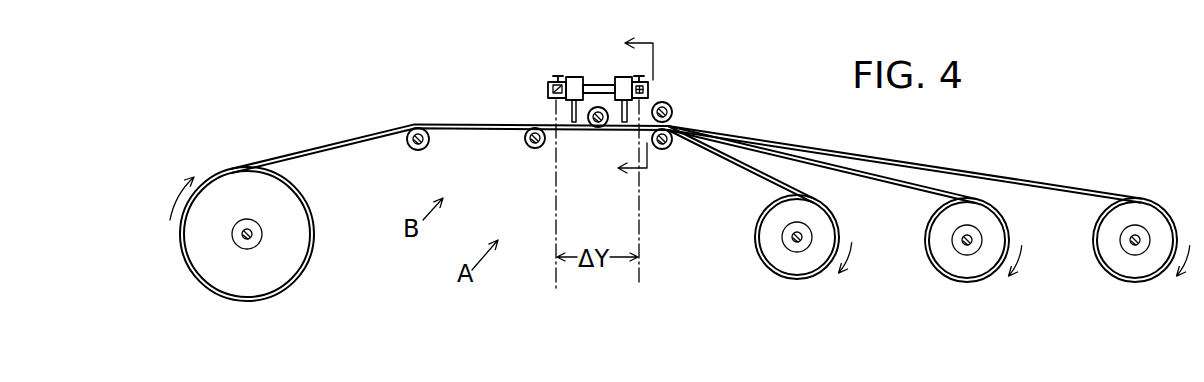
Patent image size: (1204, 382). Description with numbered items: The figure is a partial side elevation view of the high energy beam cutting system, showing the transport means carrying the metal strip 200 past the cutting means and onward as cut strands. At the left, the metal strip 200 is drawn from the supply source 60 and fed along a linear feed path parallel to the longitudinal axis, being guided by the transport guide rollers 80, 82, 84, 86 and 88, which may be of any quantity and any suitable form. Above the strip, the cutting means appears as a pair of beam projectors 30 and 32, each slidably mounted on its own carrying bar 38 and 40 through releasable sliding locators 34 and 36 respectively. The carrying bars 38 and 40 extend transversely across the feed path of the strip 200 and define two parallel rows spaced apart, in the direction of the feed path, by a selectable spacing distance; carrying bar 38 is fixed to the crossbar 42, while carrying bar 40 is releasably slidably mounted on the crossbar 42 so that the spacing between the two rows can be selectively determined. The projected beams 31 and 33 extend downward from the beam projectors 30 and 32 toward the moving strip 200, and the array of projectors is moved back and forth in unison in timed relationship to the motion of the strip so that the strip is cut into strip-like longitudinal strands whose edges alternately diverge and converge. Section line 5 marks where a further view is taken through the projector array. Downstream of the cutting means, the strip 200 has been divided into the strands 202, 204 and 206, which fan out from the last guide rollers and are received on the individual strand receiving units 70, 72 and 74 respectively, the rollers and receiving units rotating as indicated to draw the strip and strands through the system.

The section line 5- 5 is at (645, 108).
The beam projector 30 is at (575, 77).
The projected beam 31 is at (571, 117).
The beam projector 32 is at (623, 77).
The projected beam 33 is at (623, 117).
The releaseable sliding locator 34 is at (556, 78).
The releaseable sliding locator 36 is at (652, 80).
The carrying bar 38 is at (548, 90).
The carrying bar 40 is at (648, 88).
The crossbar 42 is at (597, 85).
The supply source 60 is at (260, 235).
The strand receiving unit 70 is at (785, 240).
The strand receiving unit 72 is at (957, 241).
The strand receiving unit 74 is at (1130, 243).
The transport guide roller 80 is at (412, 148).
The transport guide roller 82 is at (535, 143).
The transport guide roller 84 is at (596, 121).
The transport guide roller 86 is at (672, 112).
The transport guide roller 88 is at (668, 144).
The metal strip 200 is at (327, 136).
The strand 202 is at (1013, 178).
The strand 204 is at (888, 177).
The strand 206 is at (777, 178).